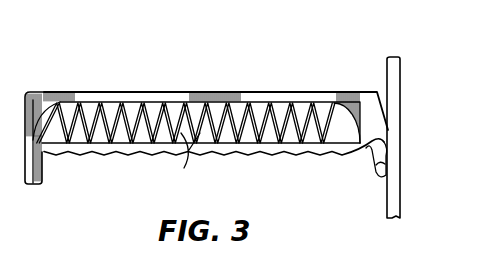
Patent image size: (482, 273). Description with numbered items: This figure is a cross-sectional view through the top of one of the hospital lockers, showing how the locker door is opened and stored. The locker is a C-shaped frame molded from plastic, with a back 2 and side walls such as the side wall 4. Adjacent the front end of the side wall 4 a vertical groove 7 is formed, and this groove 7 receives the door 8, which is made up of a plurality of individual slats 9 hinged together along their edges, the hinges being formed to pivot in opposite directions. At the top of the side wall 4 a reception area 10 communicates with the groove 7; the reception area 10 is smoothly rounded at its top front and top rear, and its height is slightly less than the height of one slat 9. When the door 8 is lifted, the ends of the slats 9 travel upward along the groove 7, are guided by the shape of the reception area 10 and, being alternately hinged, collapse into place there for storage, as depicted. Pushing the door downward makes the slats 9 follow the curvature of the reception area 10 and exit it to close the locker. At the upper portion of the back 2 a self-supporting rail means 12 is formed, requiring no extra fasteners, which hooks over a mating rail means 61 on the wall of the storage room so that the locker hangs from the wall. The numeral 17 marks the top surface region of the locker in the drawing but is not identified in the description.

The bight portion or back 2 is at (377, 165).
The side wall 4 is at (216, 95).
The vertical groove 7 is at (33, 160).
The door 8 is at (150, 108).
The slat 9 is at (189, 160).
The reception area 10 is at (43, 117).
The self-supporting rail means 12 is at (362, 157).
The top surface 17 is at (109, 93).
The mating rail means 61 is at (382, 166).